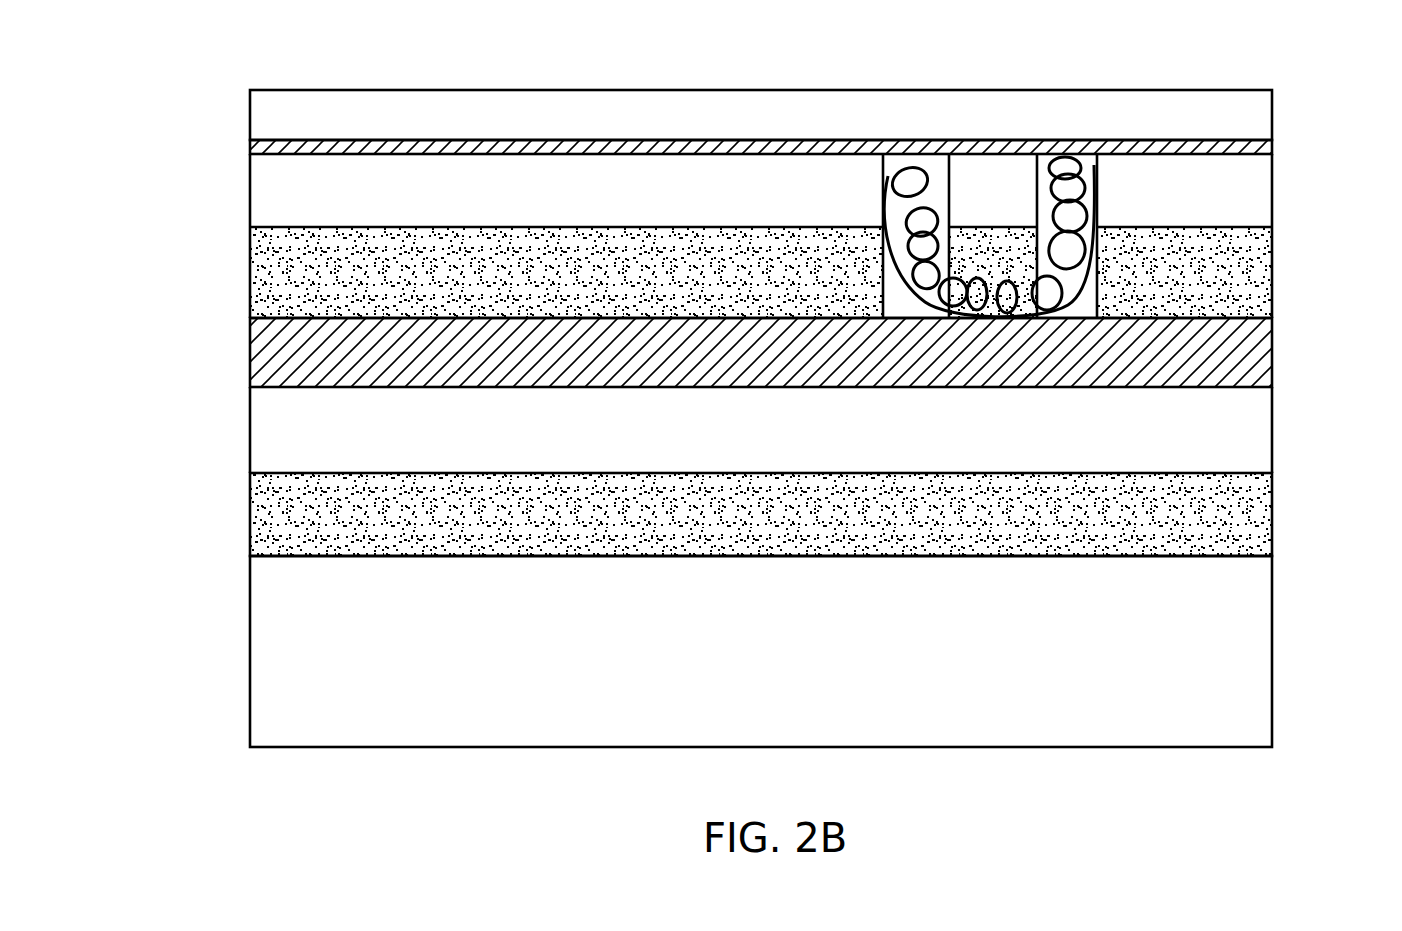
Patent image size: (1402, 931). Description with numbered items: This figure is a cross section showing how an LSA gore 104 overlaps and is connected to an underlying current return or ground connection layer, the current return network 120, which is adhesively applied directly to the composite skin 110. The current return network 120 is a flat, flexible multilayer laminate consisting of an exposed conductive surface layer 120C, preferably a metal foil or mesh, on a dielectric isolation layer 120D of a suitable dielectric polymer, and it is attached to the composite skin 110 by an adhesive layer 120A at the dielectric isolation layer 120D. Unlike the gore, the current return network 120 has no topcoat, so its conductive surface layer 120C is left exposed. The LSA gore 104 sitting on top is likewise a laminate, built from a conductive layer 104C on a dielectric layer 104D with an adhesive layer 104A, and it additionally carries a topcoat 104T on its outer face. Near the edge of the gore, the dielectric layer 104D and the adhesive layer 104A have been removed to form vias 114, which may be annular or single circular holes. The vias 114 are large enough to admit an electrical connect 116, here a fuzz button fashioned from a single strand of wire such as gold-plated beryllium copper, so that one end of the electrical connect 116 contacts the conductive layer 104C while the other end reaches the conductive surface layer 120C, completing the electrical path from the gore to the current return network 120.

The LSA gore 104 is at (734, 192).
The topcoat 104T is at (250, 116).
The conductive layer 104C is at (250, 148).
The dielectric layer 104D is at (250, 212).
The adhesive layer 104A is at (250, 272).
The vias 114 is at (1041, 222).
The electrical connect 116 is at (1070, 160).
The current return network 120 is at (733, 438).
The conductive surface layer 120C is at (250, 353).
The dielectric isolation layer 120D is at (250, 432).
The adhesive layer 120A is at (250, 517).
The composite skin 110 is at (250, 652).